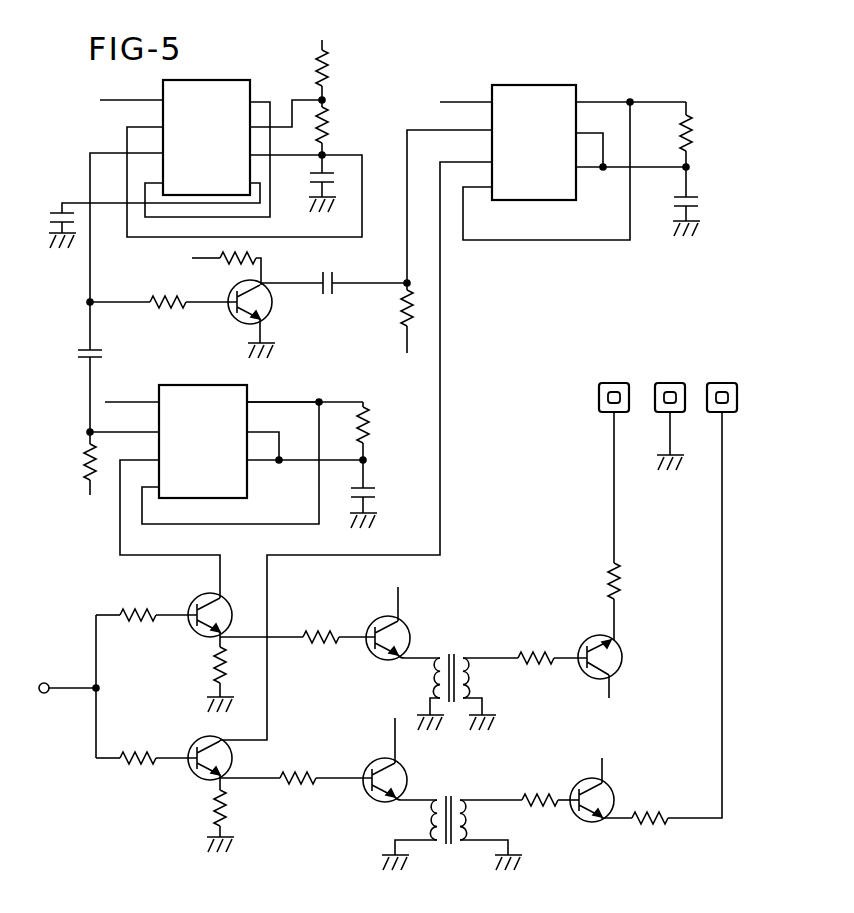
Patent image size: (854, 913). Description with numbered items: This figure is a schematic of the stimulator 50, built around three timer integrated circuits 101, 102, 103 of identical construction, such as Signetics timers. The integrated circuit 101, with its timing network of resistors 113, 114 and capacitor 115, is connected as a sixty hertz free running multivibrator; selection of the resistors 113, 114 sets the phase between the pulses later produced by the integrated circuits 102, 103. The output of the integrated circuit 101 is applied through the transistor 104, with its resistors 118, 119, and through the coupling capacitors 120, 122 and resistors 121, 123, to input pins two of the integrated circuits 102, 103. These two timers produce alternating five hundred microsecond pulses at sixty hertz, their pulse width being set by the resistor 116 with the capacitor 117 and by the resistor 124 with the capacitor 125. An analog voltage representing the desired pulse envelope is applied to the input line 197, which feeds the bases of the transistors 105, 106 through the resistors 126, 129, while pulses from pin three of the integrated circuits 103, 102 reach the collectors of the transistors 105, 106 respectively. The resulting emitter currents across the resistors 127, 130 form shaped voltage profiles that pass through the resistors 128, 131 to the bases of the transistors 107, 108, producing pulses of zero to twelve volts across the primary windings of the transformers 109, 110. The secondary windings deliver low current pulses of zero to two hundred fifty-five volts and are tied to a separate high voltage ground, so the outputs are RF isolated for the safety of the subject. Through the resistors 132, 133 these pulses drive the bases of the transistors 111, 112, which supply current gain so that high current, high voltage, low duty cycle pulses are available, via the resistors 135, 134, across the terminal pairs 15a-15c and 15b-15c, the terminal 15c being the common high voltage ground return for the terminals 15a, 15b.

The stimulator 50 is at (614, 78).
The integrated circuit 101 is at (237, 80).
The integrated circuit 102 is at (550, 85).
The integrated circuit 103 is at (210, 385).
The transistor 104 is at (273, 312).
The transistor 105 is at (222, 600).
The transistor 106 is at (206, 741).
The transistor 107 is at (389, 616).
The transistor 108 is at (386, 758).
The transformer 109 is at (453, 655).
The transformer 110 is at (450, 797).
The transistor 111 is at (623, 658).
The transistor 112 is at (586, 780).
The resistor 113 is at (329, 66).
The resistor 114 is at (329, 114).
The capacitor 115 is at (316, 179).
The resistor 116 is at (695, 130).
The capacitor 117 is at (698, 201).
The resistor 118 is at (226, 262).
The resistor 119 is at (154, 298).
The capacitor 120 is at (323, 272).
The resistor 121 is at (402, 306).
The capacitor 122 is at (104, 352).
The resistor 123 is at (84, 460).
The resistor 124 is at (371, 429).
The capacitor 125 is at (378, 494).
The resistor 126 is at (142, 608).
The resistor 127 is at (214, 657).
The resistor 128 is at (325, 628).
The resistor 129 is at (142, 750).
The resistor 130 is at (212, 808).
The resistor 131 is at (311, 768).
The resistor 132 is at (541, 651).
The resistor 133 is at (526, 794).
The resistor 134 is at (656, 808).
The resistor 135 is at (619, 578).
The input line 197 is at (70, 683).
The terminal 15a is at (612, 383).
The terminal 15b is at (722, 383).
The terminal 15c is at (670, 383).